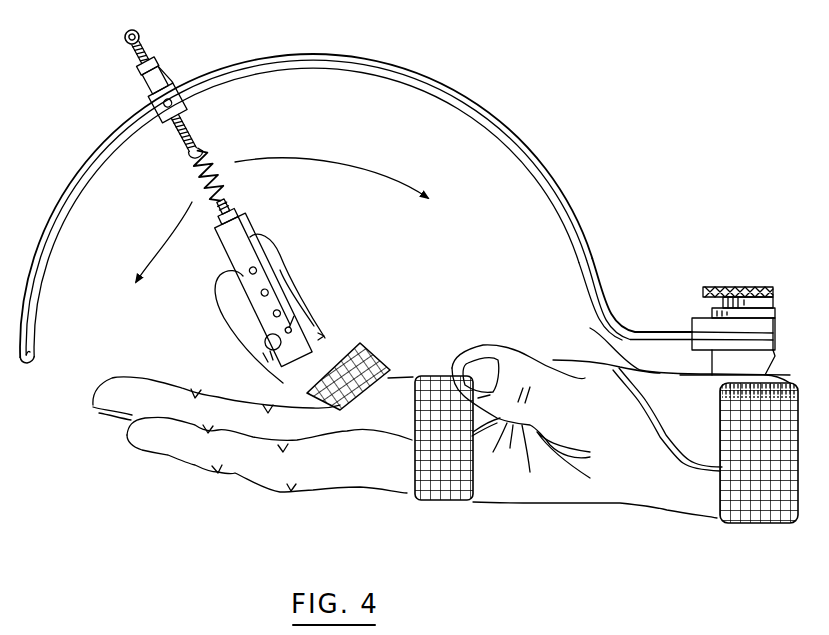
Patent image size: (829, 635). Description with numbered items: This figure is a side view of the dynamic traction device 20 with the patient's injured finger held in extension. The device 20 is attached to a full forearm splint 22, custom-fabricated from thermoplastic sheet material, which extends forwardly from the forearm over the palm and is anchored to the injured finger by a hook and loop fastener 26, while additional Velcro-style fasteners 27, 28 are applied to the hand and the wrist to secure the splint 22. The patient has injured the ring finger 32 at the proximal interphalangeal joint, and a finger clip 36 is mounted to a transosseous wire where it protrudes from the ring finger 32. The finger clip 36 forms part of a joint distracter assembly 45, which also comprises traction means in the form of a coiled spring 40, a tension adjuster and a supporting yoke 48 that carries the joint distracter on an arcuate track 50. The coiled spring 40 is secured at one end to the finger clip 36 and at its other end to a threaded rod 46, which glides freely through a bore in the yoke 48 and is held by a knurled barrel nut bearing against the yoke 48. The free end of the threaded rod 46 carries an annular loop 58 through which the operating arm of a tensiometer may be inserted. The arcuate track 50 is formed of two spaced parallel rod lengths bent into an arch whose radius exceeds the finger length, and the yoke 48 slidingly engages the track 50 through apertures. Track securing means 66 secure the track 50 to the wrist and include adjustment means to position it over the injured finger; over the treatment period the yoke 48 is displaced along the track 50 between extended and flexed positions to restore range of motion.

The dynamic traction device 20 is at (276, 44).
The full forearm splint 22 is at (590, 328).
The hook and loop fastener 26 is at (367, 345).
The hand fastener 27 is at (425, 505).
The wrist fastener 28 is at (727, 522).
The ring finger 32 is at (278, 273).
The finger clip 36 is at (257, 212).
The coiled spring 40 is at (207, 170).
The joint distracter assembly 45 is at (164, 192).
The threaded rod 46 is at (152, 50).
The supporting yoke 48 is at (148, 90).
The arcuate track 50 is at (358, 60).
The annular loop 58 is at (125, 32).
The track securing means 66 is at (691, 278).